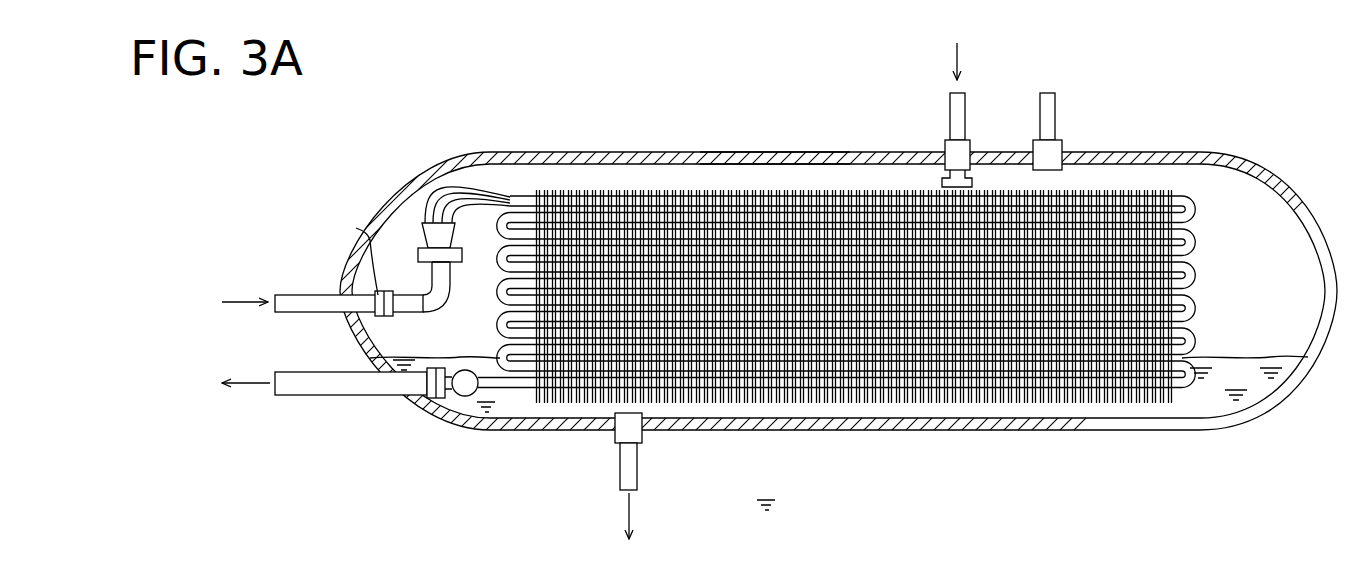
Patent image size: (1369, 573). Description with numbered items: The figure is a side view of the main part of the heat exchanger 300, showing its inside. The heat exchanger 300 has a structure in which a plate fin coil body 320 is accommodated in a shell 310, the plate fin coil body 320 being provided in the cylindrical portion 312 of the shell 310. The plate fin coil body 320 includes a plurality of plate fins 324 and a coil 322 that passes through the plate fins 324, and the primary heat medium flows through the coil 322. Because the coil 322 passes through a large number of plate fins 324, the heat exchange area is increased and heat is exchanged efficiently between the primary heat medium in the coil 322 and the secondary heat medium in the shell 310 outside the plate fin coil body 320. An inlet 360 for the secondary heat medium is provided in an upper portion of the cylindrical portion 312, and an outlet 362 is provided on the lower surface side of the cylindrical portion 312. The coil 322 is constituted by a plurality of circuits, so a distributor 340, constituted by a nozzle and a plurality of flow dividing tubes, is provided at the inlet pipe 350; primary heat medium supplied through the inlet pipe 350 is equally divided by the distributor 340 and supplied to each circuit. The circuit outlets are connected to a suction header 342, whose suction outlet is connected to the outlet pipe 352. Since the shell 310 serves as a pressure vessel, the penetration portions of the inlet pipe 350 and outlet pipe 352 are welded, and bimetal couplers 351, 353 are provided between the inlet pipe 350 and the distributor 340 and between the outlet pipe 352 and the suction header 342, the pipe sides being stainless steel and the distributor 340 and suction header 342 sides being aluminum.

The heat exchanger 300 is at (477, 66).
The shell 310 is at (1128, 147).
The cylindrical portion 312 is at (769, 152).
The plate fin coil body 320 is at (663, 186).
The coil 322 is at (523, 195).
The plate fins 324 is at (760, 368).
The distributor 340 is at (423, 240).
The suction header 342 is at (460, 398).
The inlet pipe 350 is at (293, 295).
The bimetal coupler 351 is at (370, 238).
The outlet pipe 352 is at (297, 395).
The bimetal coupler 353 is at (431, 368).
The inlet 360 is at (943, 145).
The outlet 362 is at (643, 443).